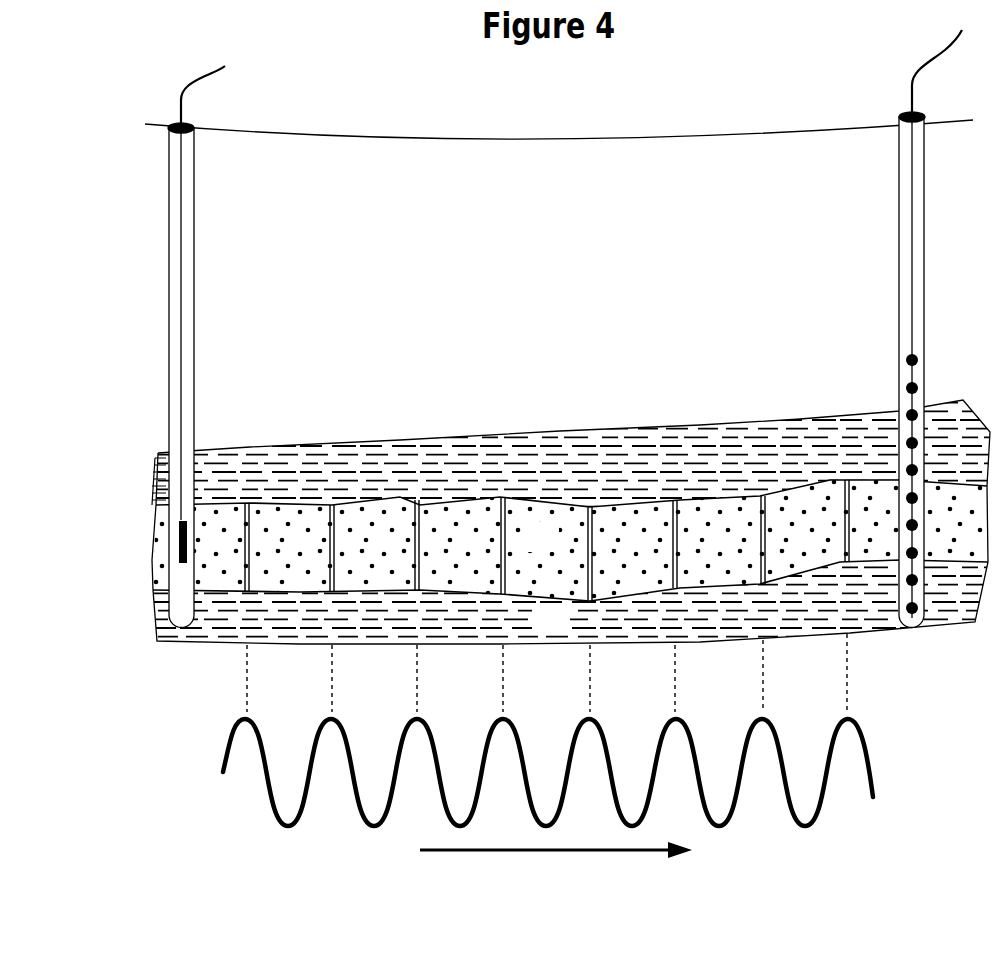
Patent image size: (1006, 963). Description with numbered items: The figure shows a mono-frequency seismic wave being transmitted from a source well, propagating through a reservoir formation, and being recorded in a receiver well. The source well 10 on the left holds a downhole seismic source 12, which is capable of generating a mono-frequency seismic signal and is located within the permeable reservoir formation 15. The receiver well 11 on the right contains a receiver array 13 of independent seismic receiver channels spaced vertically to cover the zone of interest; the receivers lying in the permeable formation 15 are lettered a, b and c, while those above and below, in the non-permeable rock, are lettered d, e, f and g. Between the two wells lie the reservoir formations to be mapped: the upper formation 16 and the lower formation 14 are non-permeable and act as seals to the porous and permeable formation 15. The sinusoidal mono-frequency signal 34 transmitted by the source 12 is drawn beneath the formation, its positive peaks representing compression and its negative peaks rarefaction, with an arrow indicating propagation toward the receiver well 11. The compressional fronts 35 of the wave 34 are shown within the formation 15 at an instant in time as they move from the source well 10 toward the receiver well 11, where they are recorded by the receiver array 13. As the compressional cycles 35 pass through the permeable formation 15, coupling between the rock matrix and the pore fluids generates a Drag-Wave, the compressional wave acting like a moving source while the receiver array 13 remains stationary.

The source well 10 is at (200, 347).
The receiver well 11 is at (907, 329).
The downhole seismic source 12 is at (180, 563).
The receiver array 13 is at (907, 330).
The non-permeable reservoir formation 14 is at (570, 602).
The permeable reservoir formation 15 is at (570, 540).
The non-permeable reservoir formation 16 is at (571, 453).
The sinusoidal mono-frequency signal 34 is at (548, 746).
The compressional fronts 35 is at (847, 480).